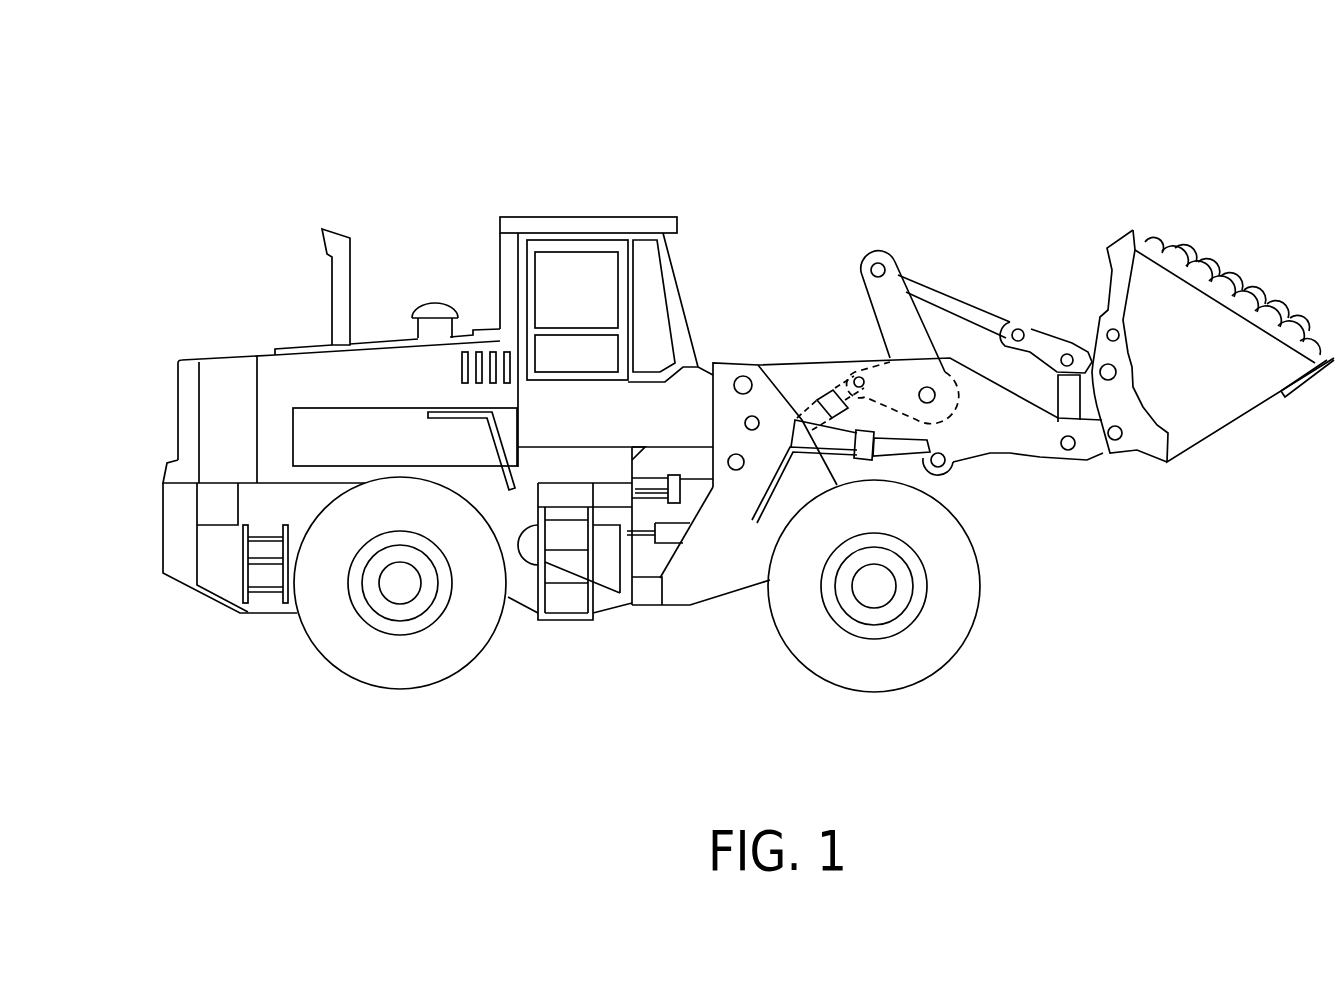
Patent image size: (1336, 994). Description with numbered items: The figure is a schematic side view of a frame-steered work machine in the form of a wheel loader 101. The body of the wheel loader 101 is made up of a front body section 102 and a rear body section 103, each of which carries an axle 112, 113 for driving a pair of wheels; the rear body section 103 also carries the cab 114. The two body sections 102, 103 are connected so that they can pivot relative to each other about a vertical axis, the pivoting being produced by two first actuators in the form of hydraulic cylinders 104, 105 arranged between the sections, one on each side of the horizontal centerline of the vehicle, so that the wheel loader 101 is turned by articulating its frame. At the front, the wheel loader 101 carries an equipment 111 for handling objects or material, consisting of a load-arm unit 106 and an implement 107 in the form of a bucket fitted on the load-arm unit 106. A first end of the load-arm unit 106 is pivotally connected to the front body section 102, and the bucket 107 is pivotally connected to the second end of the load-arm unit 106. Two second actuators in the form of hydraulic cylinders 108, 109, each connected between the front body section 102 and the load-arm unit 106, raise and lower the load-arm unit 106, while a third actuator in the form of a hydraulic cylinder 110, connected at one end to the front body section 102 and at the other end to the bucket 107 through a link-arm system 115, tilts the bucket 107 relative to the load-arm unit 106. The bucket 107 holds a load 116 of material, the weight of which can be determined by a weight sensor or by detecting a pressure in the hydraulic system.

The wheel loader 101 is at (450, 140).
The front body section 102 is at (698, 575).
The rear body section 103 is at (222, 573).
The hydraulic cylinder 104 is at (698, 490).
The hydraulic cylinder 105 is at (571, 599).
The load-arm unit 106 is at (1087, 450).
The implement 107 is at (1197, 400).
The hydraulic cylinder 108 is at (903, 455).
The hydraulic cylinder 109 is at (1050, 519).
The hydraulic cylinder 110 is at (840, 388).
The equipment 111 is at (1032, 203).
The axle 112 is at (395, 588).
The axle 113 is at (880, 583).
The cab 114 is at (585, 225).
The link-arm system 115 is at (948, 300).
The load 116 is at (1227, 287).